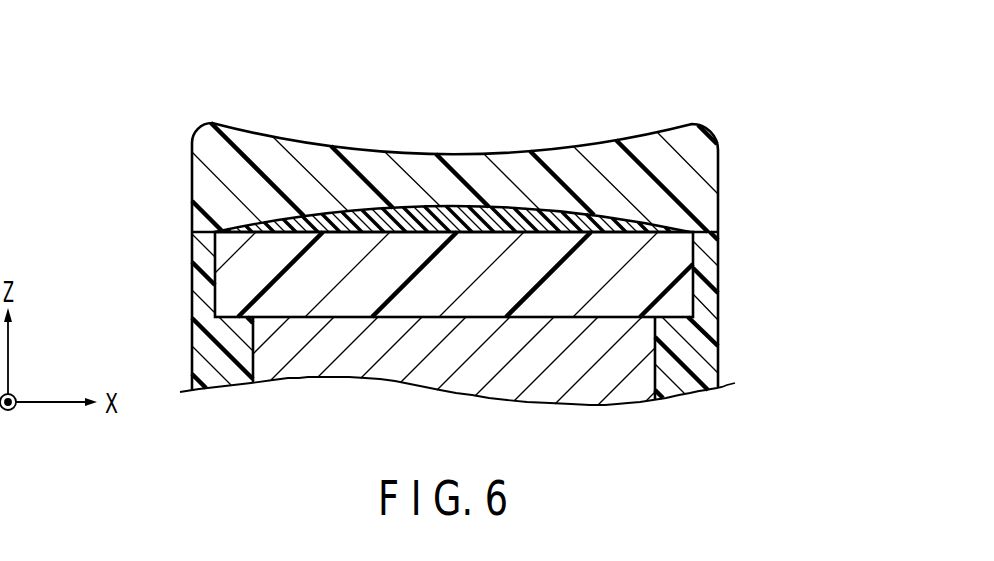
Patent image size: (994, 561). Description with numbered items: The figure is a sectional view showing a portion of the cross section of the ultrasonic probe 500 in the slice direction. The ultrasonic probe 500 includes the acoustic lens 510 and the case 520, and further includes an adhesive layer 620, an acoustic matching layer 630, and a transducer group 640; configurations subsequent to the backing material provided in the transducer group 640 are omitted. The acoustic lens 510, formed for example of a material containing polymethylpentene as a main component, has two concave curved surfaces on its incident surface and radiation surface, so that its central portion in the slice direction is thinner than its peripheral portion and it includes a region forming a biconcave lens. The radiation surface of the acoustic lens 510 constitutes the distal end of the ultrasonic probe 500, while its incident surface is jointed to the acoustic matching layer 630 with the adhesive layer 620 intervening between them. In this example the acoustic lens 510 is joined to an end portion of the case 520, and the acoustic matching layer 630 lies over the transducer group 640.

The ultrasonic probe 500 is at (685, 83).
The acoustic lens 510 is at (703, 163).
The case 520 is at (200, 253).
The adhesive layer 620 is at (627, 225).
The acoustic matching layer 630 is at (673, 292).
The transducer group 640 is at (640, 360).